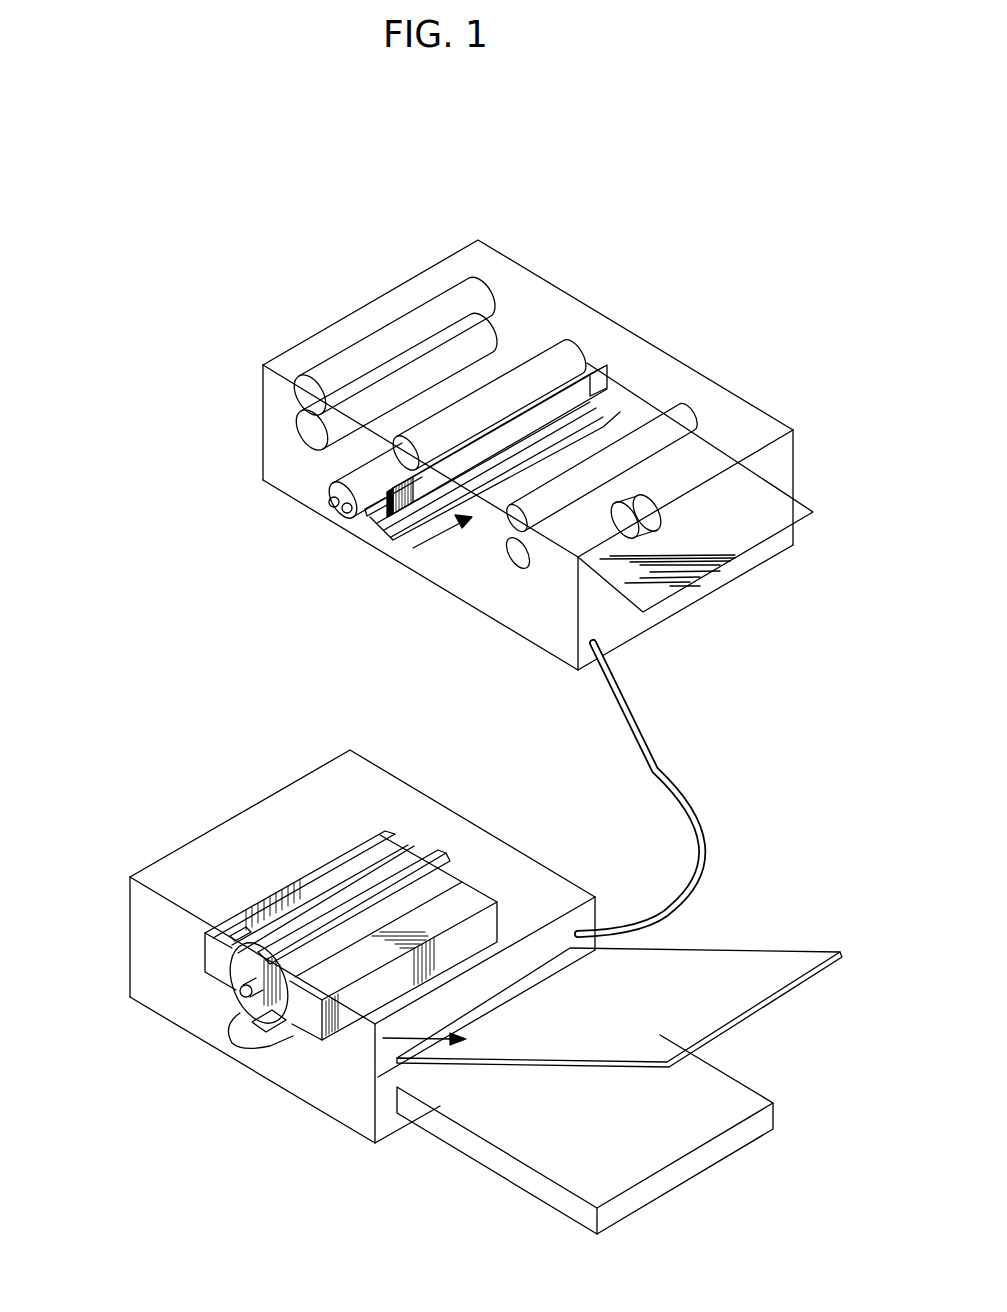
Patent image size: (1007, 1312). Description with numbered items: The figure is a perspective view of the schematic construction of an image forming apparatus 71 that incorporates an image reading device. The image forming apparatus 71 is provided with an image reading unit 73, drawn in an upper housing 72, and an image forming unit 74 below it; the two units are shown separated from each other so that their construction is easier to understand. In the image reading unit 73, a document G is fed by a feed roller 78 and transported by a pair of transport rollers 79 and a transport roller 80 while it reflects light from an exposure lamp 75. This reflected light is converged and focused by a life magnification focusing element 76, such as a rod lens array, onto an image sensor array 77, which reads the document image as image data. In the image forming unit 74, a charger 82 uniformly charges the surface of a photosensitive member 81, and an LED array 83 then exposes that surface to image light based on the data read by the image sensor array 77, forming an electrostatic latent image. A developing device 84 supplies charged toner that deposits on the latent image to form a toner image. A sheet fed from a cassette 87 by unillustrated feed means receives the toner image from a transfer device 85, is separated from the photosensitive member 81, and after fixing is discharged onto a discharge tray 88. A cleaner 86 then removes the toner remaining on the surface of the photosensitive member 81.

The image forming apparatus 71 is at (142, 411).
The housing 72 is at (528, 320).
The image reading unit 73 is at (249, 464).
The image forming unit 74 is at (323, 755).
The exposure lamp 75 is at (323, 487).
The life magnification focusing element 76 is at (367, 513).
The image sensor array 77 is at (375, 524).
The feed roller 78 is at (662, 508).
The pair of transport rollers 79 is at (512, 568).
The transport roller 80 is at (593, 363).
The photosensitive member 81 is at (240, 1018).
The charger 82 is at (453, 850).
The LED array 83 is at (398, 833).
The developing device 84 is at (203, 965).
The transfer device 85 is at (277, 1023).
The cleaner 86 is at (493, 893).
The cassette 87 is at (772, 1102).
The discharge tray 88 is at (708, 950).
The document G is at (783, 493).